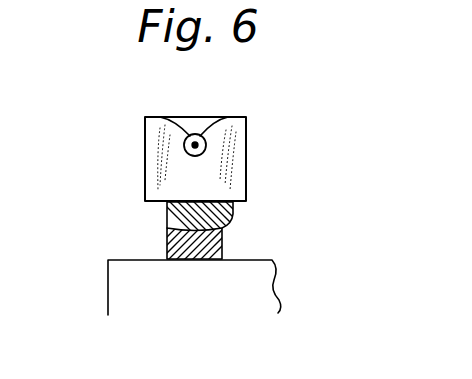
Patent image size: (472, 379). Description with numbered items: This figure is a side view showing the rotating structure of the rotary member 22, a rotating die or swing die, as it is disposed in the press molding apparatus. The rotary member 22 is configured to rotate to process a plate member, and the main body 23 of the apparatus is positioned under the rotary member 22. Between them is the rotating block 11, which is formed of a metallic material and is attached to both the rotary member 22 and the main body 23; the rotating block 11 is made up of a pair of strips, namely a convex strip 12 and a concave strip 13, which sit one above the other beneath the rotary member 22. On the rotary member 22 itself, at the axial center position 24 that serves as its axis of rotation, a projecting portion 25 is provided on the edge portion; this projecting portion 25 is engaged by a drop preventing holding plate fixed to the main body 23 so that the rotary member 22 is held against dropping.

The rotating block 11 is at (159, 240).
The convex strip 12 is at (236, 206).
The concave strip 13 is at (216, 243).
The rotary member 22 is at (250, 131).
The main body 23 is at (189, 284).
The axial center position 24 is at (164, 117).
The projecting portions 25 is at (222, 117).